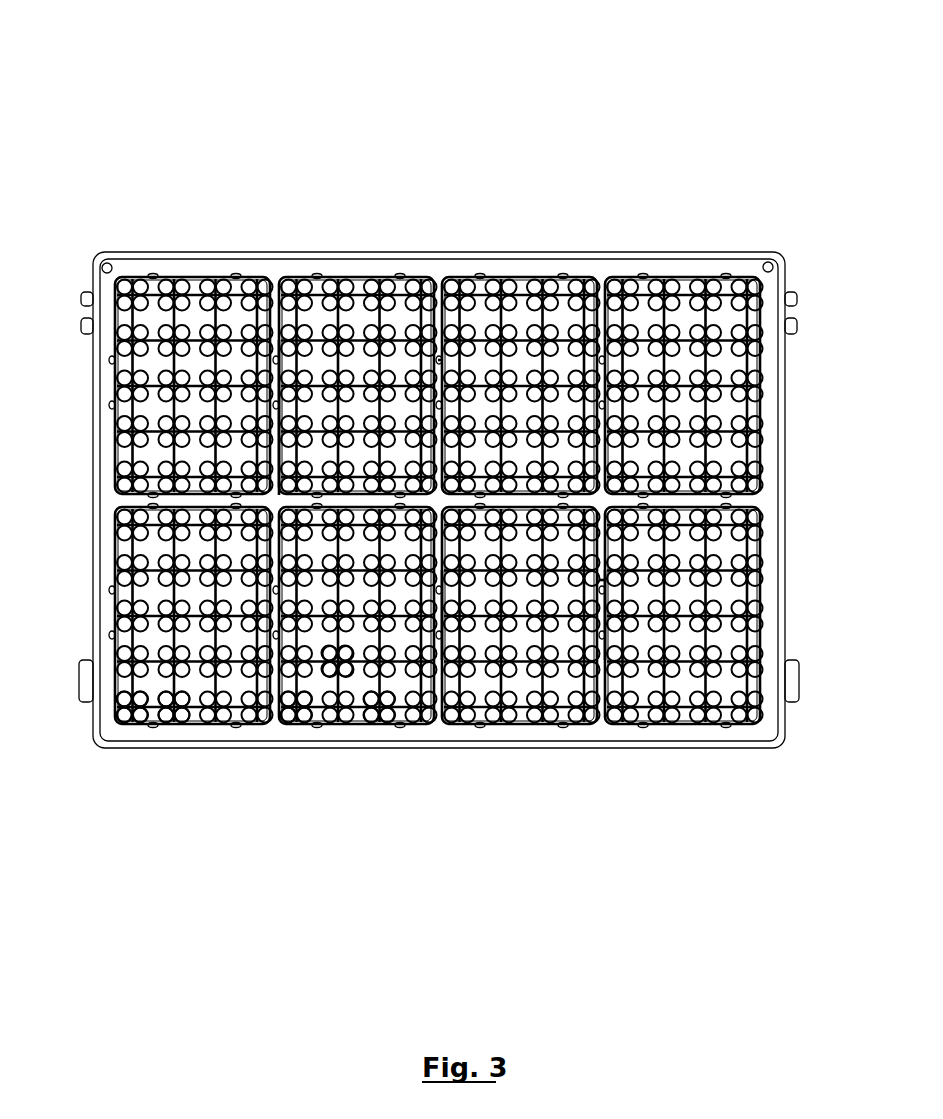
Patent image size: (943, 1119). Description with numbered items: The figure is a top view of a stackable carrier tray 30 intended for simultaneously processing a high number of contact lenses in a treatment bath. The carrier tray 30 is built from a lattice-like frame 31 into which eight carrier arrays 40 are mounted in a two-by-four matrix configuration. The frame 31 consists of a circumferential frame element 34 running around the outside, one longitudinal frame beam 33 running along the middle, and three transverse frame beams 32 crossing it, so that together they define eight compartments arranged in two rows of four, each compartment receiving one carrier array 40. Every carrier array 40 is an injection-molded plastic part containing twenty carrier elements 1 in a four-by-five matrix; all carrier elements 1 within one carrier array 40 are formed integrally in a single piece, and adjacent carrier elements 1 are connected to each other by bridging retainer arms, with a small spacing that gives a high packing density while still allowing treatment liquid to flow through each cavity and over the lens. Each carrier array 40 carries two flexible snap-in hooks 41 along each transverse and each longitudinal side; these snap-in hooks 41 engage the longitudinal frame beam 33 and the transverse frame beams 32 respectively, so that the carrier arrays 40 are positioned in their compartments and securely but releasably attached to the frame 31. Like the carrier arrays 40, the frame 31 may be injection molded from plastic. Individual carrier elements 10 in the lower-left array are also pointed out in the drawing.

The frame assembly 30 is at (435, 460).
The frame 31 is at (733, 258).
The panel strut 32 is at (276, 392).
The panel divider 33 is at (352, 497).
The side tab 34 is at (108, 525).
The panel 40 is at (562, 265).
The grid bar 41 is at (540, 478).
The component unit 1 is at (337, 662).
The component 10 is at (131, 730).